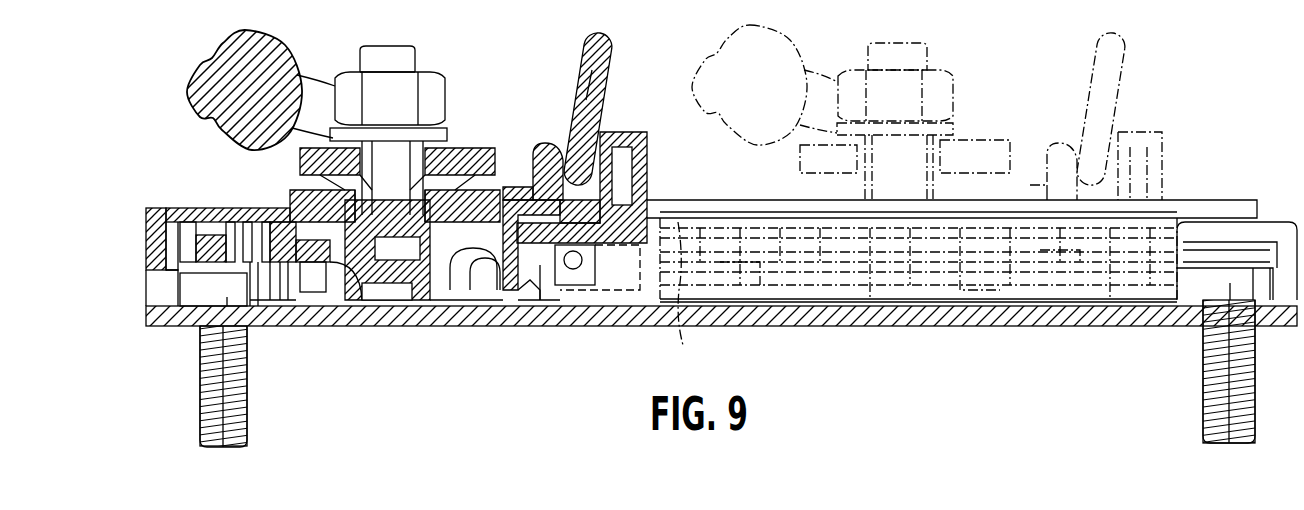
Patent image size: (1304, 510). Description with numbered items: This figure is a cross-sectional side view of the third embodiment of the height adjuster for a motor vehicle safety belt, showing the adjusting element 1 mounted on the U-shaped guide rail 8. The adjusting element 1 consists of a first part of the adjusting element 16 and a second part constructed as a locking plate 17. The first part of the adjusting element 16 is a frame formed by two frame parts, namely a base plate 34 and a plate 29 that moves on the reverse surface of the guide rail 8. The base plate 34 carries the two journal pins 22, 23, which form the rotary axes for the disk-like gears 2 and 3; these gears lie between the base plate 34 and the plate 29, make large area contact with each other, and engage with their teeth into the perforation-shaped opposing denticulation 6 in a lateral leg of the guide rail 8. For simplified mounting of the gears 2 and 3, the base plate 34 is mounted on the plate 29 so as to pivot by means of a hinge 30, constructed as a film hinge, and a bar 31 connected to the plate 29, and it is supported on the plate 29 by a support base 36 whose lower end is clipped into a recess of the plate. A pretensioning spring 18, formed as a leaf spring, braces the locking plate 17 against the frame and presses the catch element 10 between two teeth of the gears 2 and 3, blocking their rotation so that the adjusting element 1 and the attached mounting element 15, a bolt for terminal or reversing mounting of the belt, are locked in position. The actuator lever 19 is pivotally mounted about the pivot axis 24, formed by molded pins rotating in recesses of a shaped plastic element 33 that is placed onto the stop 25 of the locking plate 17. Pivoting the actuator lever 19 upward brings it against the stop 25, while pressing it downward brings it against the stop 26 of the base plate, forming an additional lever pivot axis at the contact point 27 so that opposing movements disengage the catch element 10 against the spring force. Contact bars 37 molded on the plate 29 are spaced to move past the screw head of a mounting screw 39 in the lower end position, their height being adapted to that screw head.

The adjusting element 1 is at (468, 112).
The gear 2 is at (273, 265).
The gear 3 is at (207, 235).
The opposing denticulation 6 is at (690, 297).
The guide rail 8 is at (1213, 202).
The catch element 10 is at (330, 260).
The mounting element 15 is at (380, 167).
The first part of the adjusting element 16 is at (262, 240).
The locking plate 17 is at (440, 223).
The pretensioning spring 18 is at (467, 257).
The actuator lever 19 is at (585, 63).
The journal pin 22 is at (247, 263).
The journal pin 23 is at (267, 257).
The pivot axis 24 is at (573, 257).
The stop 25 is at (612, 147).
The stop 26 is at (545, 148).
The contact point 27 is at (587, 75).
The plate 29 is at (730, 313).
The hinge 30 is at (172, 205).
The bar 31 is at (173, 250).
The shaped plastic element 33 is at (603, 183).
The base plate 34 is at (230, 215).
The support base 36 is at (540, 280).
The contact bar 37 is at (167, 292).
The mounting screw 39 is at (247, 425).